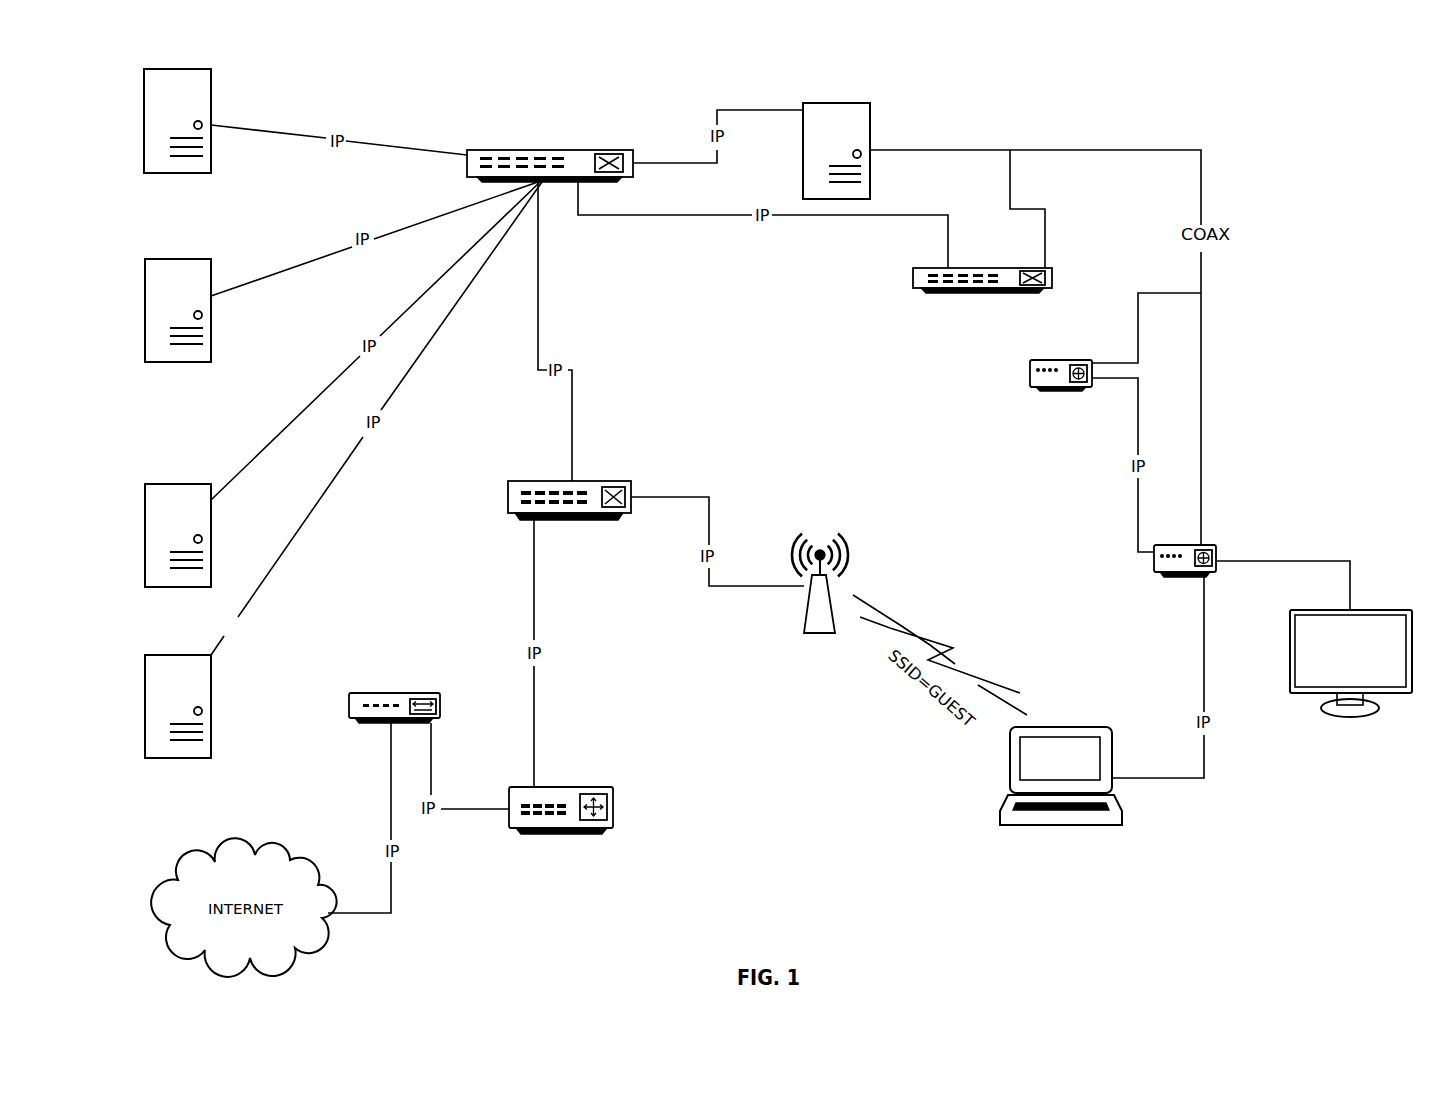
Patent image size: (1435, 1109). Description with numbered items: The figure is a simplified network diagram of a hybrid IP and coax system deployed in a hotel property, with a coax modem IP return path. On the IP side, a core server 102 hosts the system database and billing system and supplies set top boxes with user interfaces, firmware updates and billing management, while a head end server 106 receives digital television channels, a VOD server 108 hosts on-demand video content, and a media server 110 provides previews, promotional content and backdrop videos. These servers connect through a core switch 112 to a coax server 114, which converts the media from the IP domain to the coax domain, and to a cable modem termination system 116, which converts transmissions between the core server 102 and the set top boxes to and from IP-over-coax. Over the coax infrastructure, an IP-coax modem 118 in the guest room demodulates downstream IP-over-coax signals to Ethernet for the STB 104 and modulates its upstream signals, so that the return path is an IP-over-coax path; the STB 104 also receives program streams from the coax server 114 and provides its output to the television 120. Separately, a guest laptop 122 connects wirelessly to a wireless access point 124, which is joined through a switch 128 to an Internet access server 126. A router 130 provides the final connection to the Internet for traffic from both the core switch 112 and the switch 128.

The core server 102 is at (173, 196).
The set top box (STB) 104 is at (1170, 599).
The head end server 106 is at (163, 410).
The VOD server 108 is at (163, 610).
The media server 110 is at (180, 785).
The core switch 112 is at (604, 147).
The coax server 114 is at (870, 125).
The cable modem termination system (CMTS) 116 is at (917, 291).
The IP-coax modem 118 is at (1030, 365).
The television 120 is at (1350, 722).
The guest laptop 122 is at (1010, 847).
The wireless access point (WAP) 124 is at (790, 657).
The Internet access server 126 is at (613, 815).
The switch 128 is at (508, 500).
The router 130 is at (440, 710).